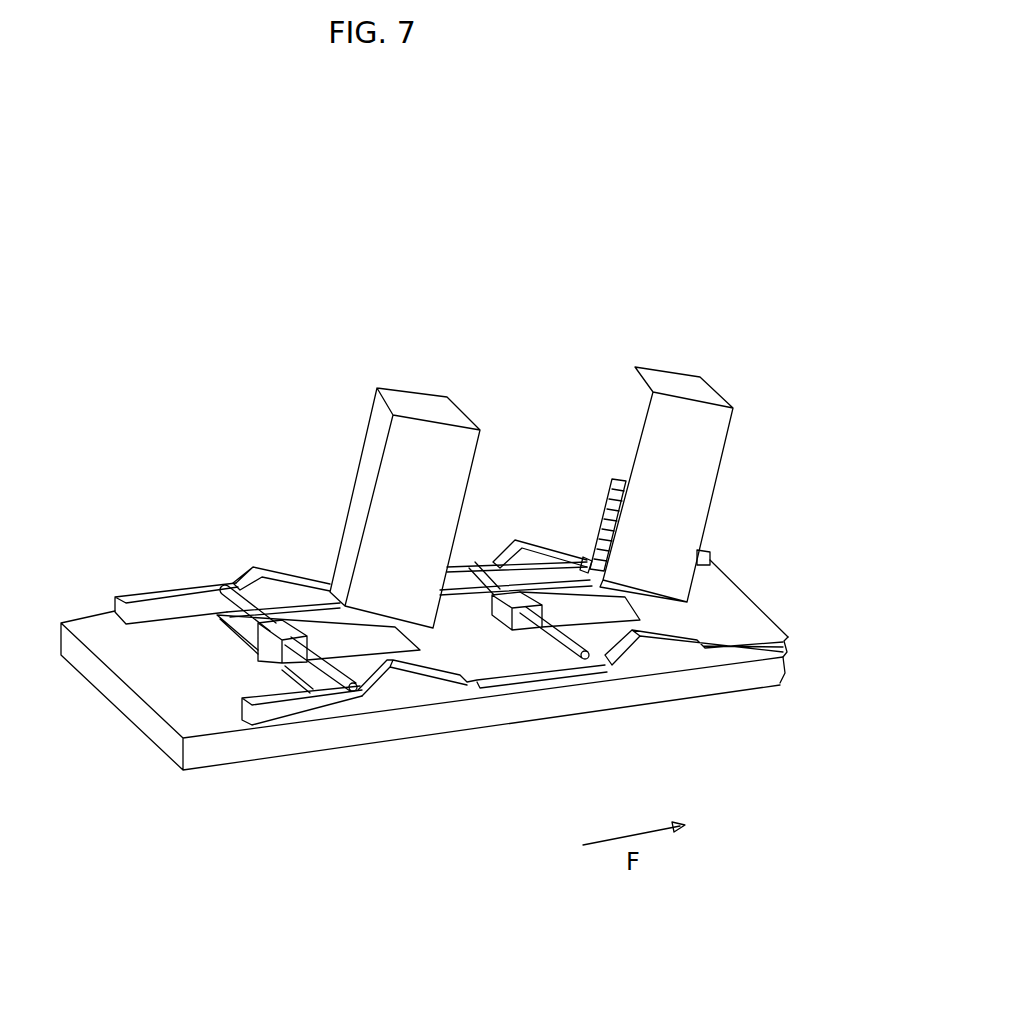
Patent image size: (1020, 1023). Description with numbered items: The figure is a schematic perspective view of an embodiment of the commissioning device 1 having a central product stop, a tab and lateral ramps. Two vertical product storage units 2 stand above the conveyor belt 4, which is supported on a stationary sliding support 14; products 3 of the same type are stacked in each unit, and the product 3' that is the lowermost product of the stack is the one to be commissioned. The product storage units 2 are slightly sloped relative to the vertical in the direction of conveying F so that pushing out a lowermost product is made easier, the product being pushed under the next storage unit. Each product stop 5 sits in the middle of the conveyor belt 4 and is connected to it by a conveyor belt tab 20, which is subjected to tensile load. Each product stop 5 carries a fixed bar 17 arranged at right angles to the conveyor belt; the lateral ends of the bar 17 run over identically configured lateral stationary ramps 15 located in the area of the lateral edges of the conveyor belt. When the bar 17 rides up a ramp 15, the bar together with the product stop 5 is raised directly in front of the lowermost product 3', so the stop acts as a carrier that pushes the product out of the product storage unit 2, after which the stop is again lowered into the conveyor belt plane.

The commissioning device 1 is at (266, 346).
The product storage unit 2 is at (422, 355).
The product 3 is at (597, 478).
The lowermost product of the stack 3' is at (569, 524).
The conveyor belt 4 is at (715, 605).
The product stop 5 is at (263, 648).
The stationary sliding support 14 is at (130, 708).
The lateral ramp 15 is at (270, 578).
The bar 17 is at (323, 665).
The conveyor belt tab 20 is at (362, 695).